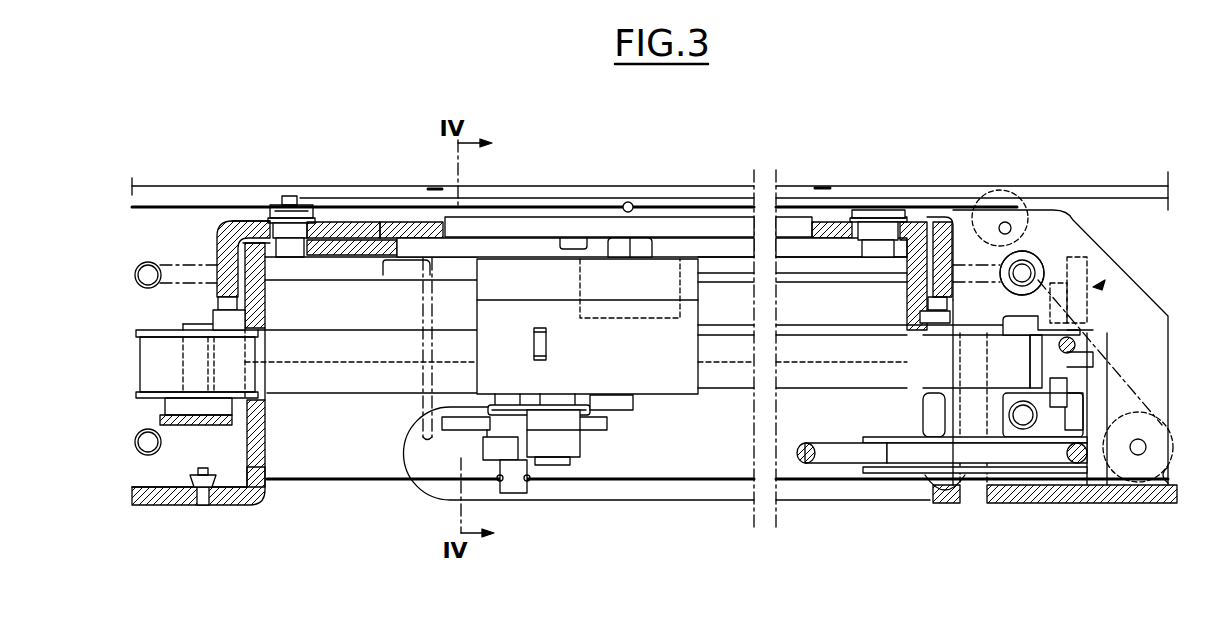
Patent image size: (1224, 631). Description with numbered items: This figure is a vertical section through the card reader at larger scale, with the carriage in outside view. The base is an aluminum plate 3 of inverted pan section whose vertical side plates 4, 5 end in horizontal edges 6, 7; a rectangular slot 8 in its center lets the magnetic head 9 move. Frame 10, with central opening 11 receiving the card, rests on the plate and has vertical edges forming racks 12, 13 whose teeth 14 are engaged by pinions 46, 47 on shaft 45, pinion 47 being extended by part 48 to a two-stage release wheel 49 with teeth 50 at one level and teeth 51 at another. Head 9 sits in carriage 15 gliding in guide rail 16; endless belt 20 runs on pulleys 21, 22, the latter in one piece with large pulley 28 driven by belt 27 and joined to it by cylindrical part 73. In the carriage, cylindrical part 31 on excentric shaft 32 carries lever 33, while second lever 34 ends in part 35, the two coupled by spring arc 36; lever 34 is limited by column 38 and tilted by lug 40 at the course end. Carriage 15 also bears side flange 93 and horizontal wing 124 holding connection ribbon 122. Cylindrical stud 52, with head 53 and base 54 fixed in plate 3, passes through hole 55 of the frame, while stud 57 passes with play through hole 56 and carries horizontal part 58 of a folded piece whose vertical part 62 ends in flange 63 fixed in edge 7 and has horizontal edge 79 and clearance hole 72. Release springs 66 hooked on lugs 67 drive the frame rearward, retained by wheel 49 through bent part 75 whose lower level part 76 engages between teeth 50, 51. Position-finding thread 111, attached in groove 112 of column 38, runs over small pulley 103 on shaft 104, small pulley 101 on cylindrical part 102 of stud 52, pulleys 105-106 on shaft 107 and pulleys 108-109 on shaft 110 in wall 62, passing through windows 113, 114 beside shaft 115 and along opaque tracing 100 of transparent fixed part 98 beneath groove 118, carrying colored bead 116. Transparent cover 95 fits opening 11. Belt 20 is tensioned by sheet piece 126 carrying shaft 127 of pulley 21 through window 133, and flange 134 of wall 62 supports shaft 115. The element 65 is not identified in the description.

The plate 3 is at (367, 250).
The side plate 4 is at (255, 292).
The side plate 5 is at (912, 292).
The horizontal edge 6 is at (170, 498).
The horizontal edge 7 is at (1032, 497).
The rectangular slot 8 is at (702, 250).
The magnetic head 9 is at (638, 246).
The frame 10 is at (385, 228).
The central opening 11 is at (812, 218).
The vertical edge 12 is at (225, 246).
The vertical edge 13 is at (940, 258).
The teeth 14 is at (222, 303).
The carriage 15 is at (656, 360).
The guide rail 16 is at (452, 268).
The endless belt 20 is at (353, 378).
The pulley 21 is at (150, 394).
The pulley 22 is at (917, 393).
The belt 27 is at (826, 456).
The large pulley 28 is at (898, 456).
The cylindrical part 31 is at (584, 402).
The excentric shaft 32 is at (558, 472).
The lever 33 is at (596, 425).
The second lever 34 is at (530, 456).
The part 35 is at (452, 428).
The arc 36 is at (554, 408).
The column 38 is at (507, 486).
The lug 40 is at (422, 404).
The shaft 45 is at (729, 330).
The pinion 46 is at (218, 315).
The pinion 47 is at (925, 322).
The part 48 is at (1070, 275).
The two-stage release wheel 49 is at (1098, 285).
The teeth 50 is at (1080, 348).
The teeth 51 is at (1057, 380).
The cylindrical stud 52 is at (298, 225).
The head 53 is at (270, 220).
The base 54 is at (292, 240).
The hole 55 is at (262, 216).
The hole 56 is at (905, 216).
The stud 57 is at (878, 230).
The horizontal part 58 is at (855, 213).
The vertical part 62 is at (1138, 312).
The flange 63 is at (1168, 477).
The notch 65 is at (573, 242).
The release spring 66 is at (1093, 225).
The lug 67 is at (172, 263).
The clearance hole 72 is at (1032, 272).
The cylindrical part 73 is at (952, 420).
The bent perpendicular part 75 is at (1078, 335).
The lower level part 76 is at (1068, 365).
The horizontal edge 79 is at (1048, 337).
The side flange 93 is at (547, 343).
The transparent cover 95 is at (528, 225).
The fixed transparent upper part 98 is at (723, 190).
The opaque tracing 100 is at (432, 186).
The small pulley 101 is at (284, 196).
The cylindrical part 102 is at (290, 205).
The small pulley 103 is at (208, 498).
The shaft 104 is at (205, 468).
The pulleys 105-106 is at (1000, 210).
The shaft 107 is at (1005, 224).
The pulleys 108-109 is at (1100, 465).
The shaft 110 is at (1146, 447).
The thread 111 is at (364, 205).
The groove 112 is at (523, 483).
The window 113 is at (254, 498).
The window 114 is at (917, 422).
The shaft 115 is at (972, 492).
The colored bead 116 is at (628, 203).
The groove 118 is at (591, 200).
The thin ribbon 122 is at (406, 460).
The horizontal wing 124 is at (616, 402).
The horizontal sheet piece 126 is at (178, 422).
The shaft 127 is at (188, 326).
The window 133 is at (260, 396).
The flange 134 is at (930, 323).